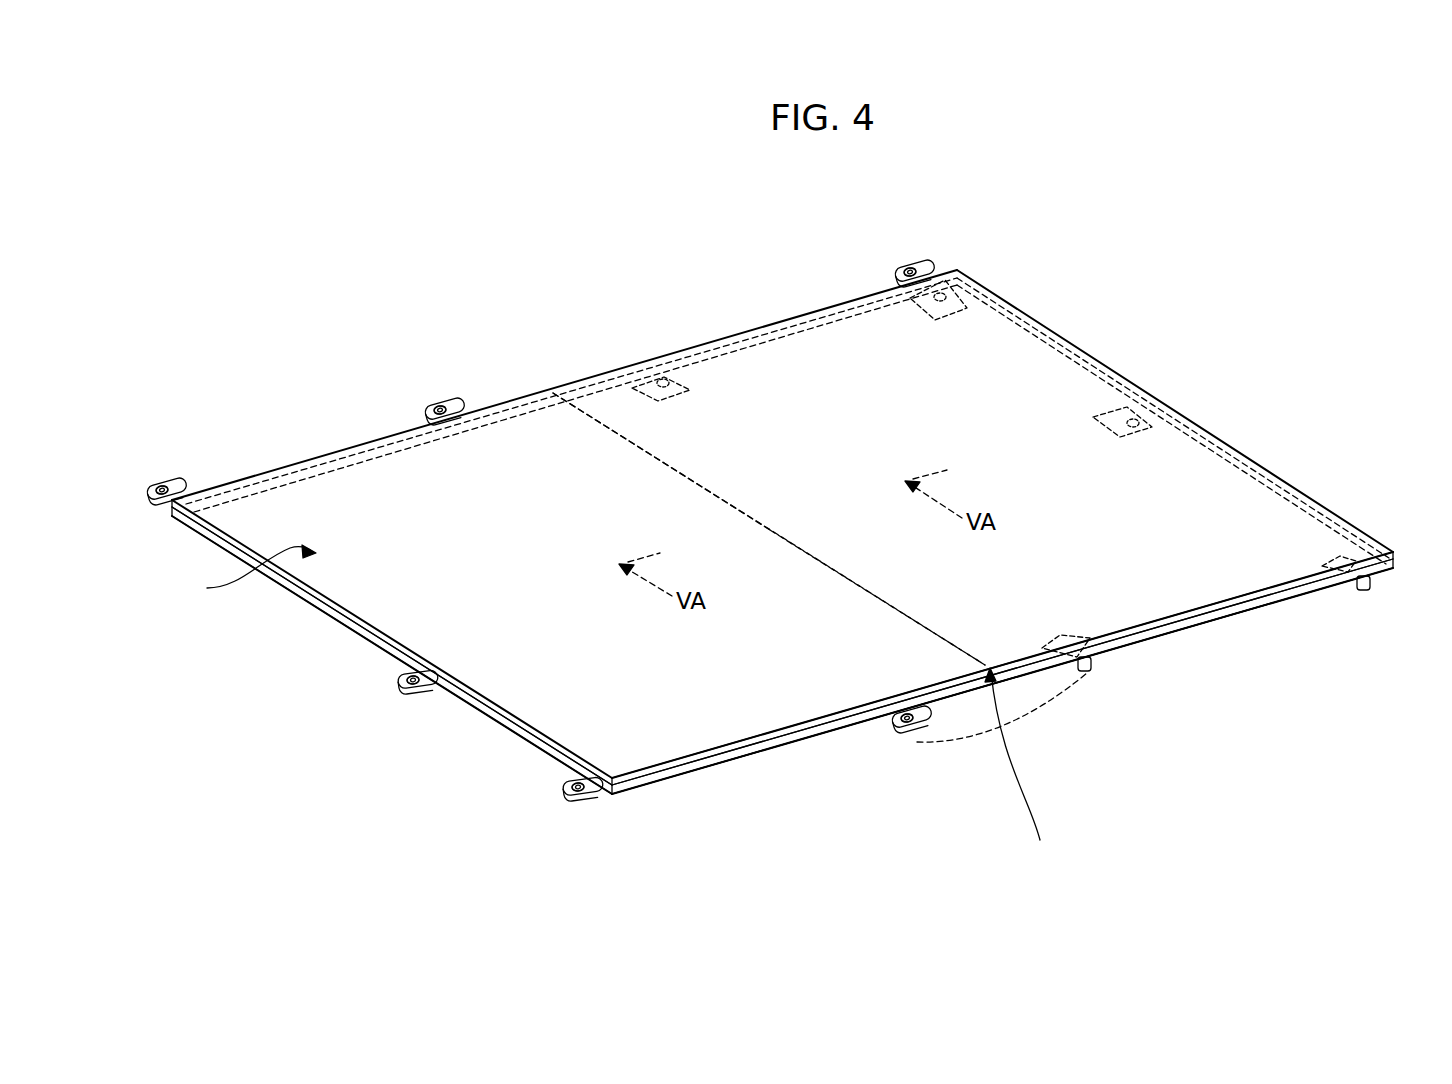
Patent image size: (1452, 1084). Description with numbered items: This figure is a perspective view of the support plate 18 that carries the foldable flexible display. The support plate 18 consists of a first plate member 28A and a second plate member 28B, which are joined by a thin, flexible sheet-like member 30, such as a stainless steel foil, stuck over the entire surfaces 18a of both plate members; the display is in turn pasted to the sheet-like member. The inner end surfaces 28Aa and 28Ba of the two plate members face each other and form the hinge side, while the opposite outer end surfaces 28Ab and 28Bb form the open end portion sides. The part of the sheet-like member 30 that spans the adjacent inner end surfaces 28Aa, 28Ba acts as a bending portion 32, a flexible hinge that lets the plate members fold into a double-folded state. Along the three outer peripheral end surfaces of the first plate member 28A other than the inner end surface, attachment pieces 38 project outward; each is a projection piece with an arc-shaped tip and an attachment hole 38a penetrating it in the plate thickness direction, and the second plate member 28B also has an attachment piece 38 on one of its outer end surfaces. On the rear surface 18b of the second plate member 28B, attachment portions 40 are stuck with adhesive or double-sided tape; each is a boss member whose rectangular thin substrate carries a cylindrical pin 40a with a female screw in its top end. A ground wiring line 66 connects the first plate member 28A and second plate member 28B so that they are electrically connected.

The support plate 18 is at (267, 310).
The surface 18a is at (697, 752).
The rear surface 18b is at (740, 758).
The first plate member 28A is at (668, 778).
The inner end surface 28Aa is at (762, 523).
The outer end surface 28Ab is at (315, 607).
The second plate member 28B is at (1164, 636).
The inner end surface 28Ba is at (810, 558).
The outer end surface 28Bb is at (1395, 568).
The sheet-like member 30 is at (248, 573).
The bending portion 32 is at (1019, 767).
The attachment piece 38 is at (173, 482).
The attachment hole 38a is at (160, 483).
The attachment portion 40 is at (945, 320).
The pin 40a is at (945, 280).
The ground wiring line 66 is at (990, 748).